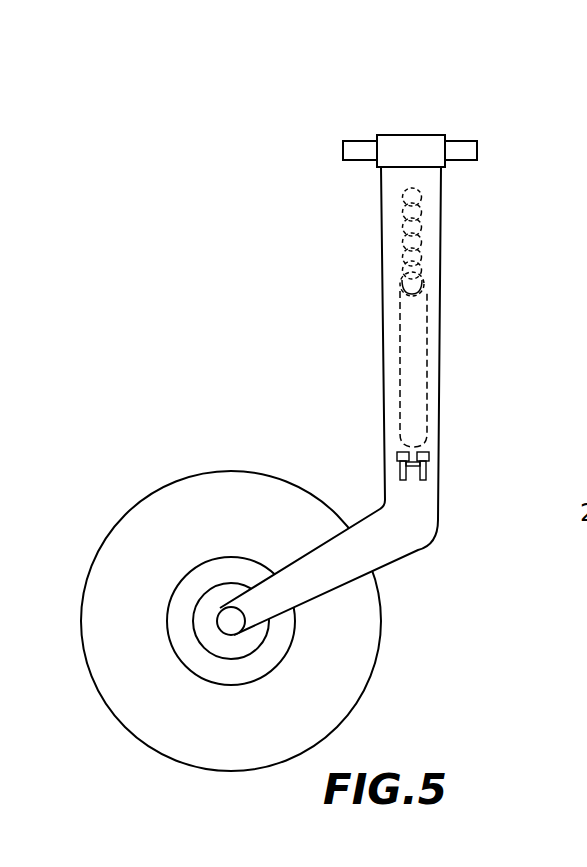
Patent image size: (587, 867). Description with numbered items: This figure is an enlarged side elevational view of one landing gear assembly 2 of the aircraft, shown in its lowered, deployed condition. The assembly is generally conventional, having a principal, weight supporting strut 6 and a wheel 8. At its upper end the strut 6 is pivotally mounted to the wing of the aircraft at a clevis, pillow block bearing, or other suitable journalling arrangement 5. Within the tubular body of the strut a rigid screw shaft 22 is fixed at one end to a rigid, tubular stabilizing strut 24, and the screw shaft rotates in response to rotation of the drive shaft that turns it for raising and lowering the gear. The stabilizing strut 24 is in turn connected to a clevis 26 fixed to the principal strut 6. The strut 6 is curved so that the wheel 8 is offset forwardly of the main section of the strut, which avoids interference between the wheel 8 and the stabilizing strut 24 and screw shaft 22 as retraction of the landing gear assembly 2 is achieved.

The landing gear assembly 2 is at (306, 476).
The journalling arrangement 5 is at (443, 109).
The principal weight supporting strut 6 is at (440, 506).
The wheel 8 is at (130, 713).
The screw shaft 22 is at (407, 232).
The tubular stabilizing strut 24 is at (405, 325).
The clevis 26 is at (459, 462).